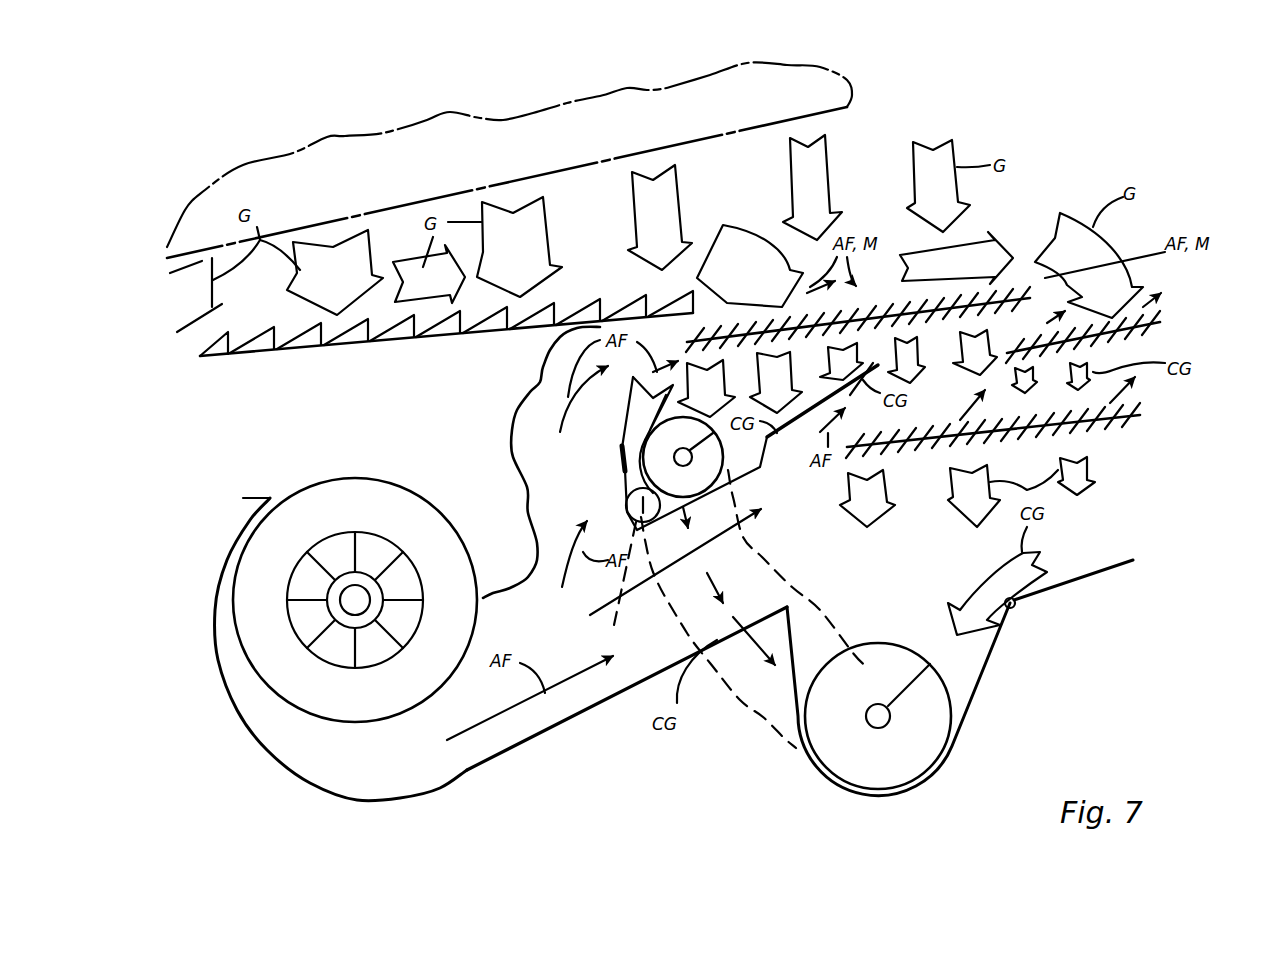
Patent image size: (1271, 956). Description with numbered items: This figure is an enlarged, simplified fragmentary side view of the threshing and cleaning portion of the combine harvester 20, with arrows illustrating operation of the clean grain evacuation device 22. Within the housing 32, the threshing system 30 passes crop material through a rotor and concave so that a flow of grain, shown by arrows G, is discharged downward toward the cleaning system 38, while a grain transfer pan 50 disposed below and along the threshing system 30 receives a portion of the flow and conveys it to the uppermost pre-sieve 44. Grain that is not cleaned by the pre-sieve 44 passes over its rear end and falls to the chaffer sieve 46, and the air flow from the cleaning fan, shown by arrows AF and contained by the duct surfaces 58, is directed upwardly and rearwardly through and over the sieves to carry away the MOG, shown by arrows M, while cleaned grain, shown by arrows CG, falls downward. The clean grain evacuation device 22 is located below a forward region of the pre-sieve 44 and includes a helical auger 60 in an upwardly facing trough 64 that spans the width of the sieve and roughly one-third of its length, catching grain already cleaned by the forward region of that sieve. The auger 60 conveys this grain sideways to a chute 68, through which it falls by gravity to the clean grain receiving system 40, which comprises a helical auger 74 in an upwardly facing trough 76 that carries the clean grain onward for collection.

The combine harvester 20 is at (1174, 111).
The clean grain evacuation device 22 is at (621, 466).
The threshing system 30 is at (856, 78).
The housing 32 is at (1085, 146).
The cleaning system 38 is at (1149, 334).
The clean grain receiving system 40 is at (945, 774).
The pre-sieve 44 is at (1022, 287).
The chaffer sieve 46 is at (1149, 334).
The grain transfer pan 50 is at (262, 357).
The duct surfaces 58 is at (515, 400).
The helical auger 60 is at (727, 445).
The trough 64 is at (770, 465).
The chute 68 is at (763, 713).
The helical auger 74 is at (953, 720).
The trough 76 is at (983, 677).